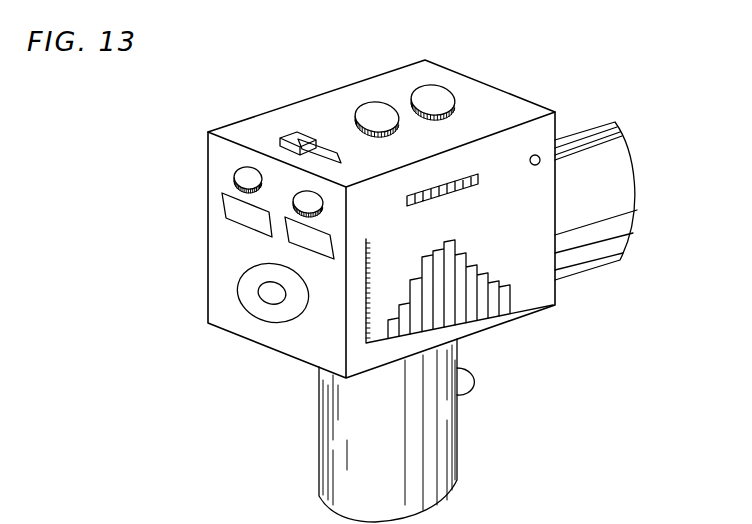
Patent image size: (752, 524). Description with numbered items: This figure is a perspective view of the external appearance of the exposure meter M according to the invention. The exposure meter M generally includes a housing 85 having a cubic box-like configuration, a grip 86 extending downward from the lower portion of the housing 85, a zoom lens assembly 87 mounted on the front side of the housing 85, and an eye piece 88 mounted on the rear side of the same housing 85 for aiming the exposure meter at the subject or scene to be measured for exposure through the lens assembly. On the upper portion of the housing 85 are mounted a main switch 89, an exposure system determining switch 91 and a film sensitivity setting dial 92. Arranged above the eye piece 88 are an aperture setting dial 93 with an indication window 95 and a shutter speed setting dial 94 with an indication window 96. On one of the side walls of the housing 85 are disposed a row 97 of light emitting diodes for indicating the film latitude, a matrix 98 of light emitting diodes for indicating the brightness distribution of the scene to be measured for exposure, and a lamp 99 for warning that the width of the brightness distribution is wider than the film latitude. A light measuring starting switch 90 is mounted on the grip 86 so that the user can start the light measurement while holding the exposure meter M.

The exposure meter M is at (601, 108).
The housing 85 is at (505, 91).
The grip 86 is at (319, 447).
The zoom lens assembly 87 is at (615, 123).
The eye piece 88 is at (257, 313).
The main switch 89 is at (295, 133).
The light measuring starting switch 90 is at (475, 374).
The exposure system determining switch 91 is at (375, 109).
The film sensitivity setting dial 92 is at (445, 96).
The aperture setting dial 93 is at (234, 179).
The shutter speed setting dial 94 is at (323, 206).
The indication window 95 is at (228, 220).
The indication window 96 is at (291, 246).
The row of light emitting diodes 97 is at (478, 179).
The matrix of light emitting diodes 98 is at (481, 259).
The lamp 99 is at (540, 156).